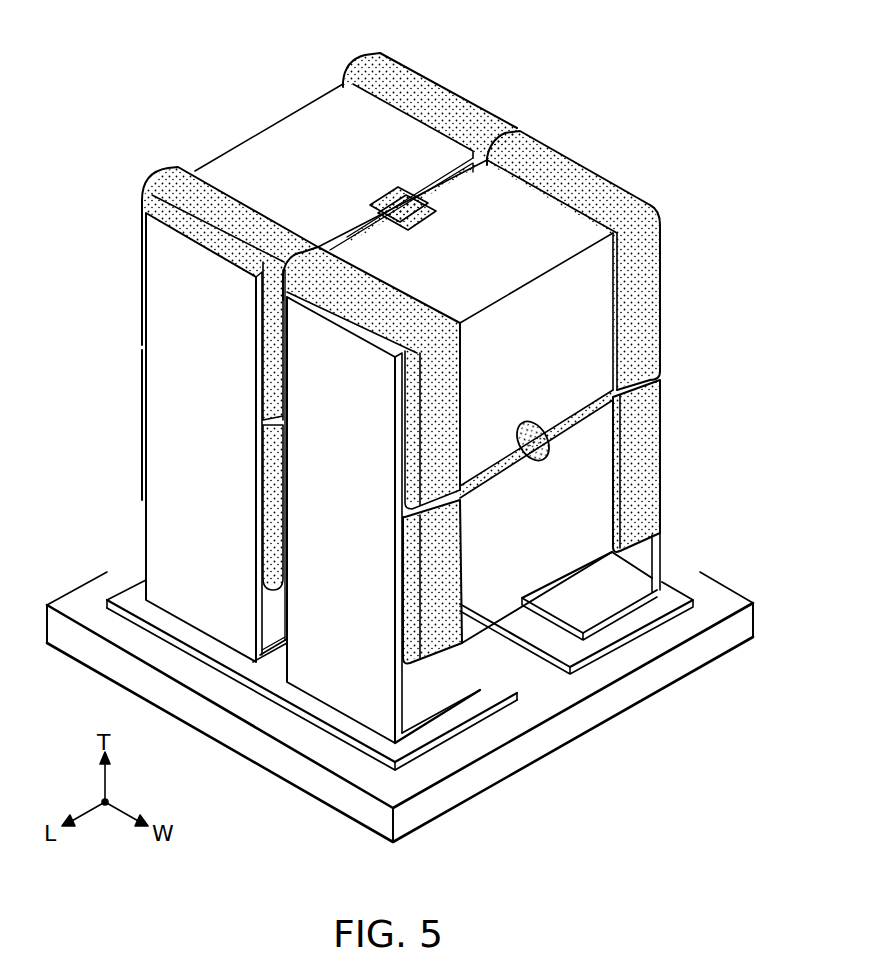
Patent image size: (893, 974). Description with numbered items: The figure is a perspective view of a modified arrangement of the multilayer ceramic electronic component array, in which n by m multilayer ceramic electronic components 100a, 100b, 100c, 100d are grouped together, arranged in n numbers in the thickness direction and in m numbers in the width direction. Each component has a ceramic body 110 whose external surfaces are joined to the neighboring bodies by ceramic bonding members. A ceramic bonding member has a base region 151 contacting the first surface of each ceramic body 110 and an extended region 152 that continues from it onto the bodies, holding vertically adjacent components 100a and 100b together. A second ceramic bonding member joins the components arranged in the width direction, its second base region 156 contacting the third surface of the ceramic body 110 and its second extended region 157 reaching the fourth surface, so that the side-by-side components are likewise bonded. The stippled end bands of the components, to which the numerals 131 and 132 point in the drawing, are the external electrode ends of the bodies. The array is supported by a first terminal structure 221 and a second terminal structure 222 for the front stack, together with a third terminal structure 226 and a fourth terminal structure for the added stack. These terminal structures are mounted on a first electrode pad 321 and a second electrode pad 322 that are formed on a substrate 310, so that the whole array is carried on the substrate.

The ceramic body 110 is at (254, 143).
The first external electrode 131 is at (166, 181).
The second external electrode 132 is at (367, 67).
The second base region 156 is at (437, 177).
The second extended region 157 is at (410, 197).
The base region 151 is at (523, 457).
The extended region 152 is at (540, 460).
The multilayer ceramic electronic component 100a is at (670, 292).
The multilayer ceramic electronic component 100b is at (670, 425).
The multilayer ceramic electronic component 100c is at (277, 214).
The multilayer ceramic electronic component 100d is at (134, 428).
The first terminal structure 221 is at (342, 668).
The second terminal structure 222 is at (656, 563).
The third terminal structure 226 is at (154, 522).
The substrate 310 is at (450, 797).
The first electrode pad 321 is at (435, 730).
The second electrode pad 322 is at (650, 612).